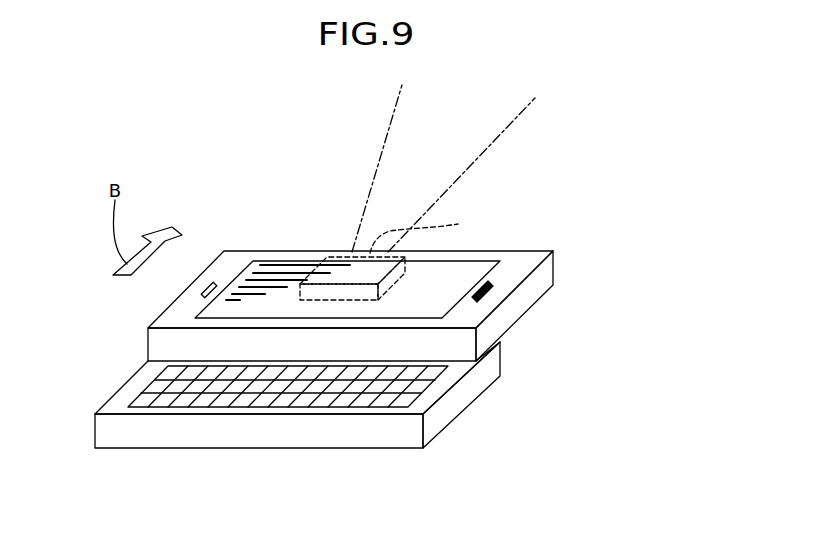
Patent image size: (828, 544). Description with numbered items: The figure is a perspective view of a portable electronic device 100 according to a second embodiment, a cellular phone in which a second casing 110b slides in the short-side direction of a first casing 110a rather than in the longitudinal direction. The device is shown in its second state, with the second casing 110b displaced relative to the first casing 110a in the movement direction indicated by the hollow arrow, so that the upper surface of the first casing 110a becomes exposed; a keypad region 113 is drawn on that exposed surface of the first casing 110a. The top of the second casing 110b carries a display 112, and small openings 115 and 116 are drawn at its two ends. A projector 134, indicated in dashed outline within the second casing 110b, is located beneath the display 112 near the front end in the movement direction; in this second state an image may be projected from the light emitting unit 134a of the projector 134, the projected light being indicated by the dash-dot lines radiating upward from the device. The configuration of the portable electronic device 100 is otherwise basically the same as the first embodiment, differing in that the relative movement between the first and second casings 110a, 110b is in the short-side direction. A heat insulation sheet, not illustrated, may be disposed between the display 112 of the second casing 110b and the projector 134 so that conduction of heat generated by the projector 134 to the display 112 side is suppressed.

The portable electronic device 100 is at (584, 130).
The first casing 110a is at (503, 353).
The second casing 110b is at (555, 269).
The display 112 is at (265, 270).
The keypad (user input unit) 113 is at (417, 388).
The audio output unit 115 is at (215, 283).
The camera 116 is at (478, 282).
The projector 134 is at (338, 253).
The light emitting unit 134a is at (440, 233).